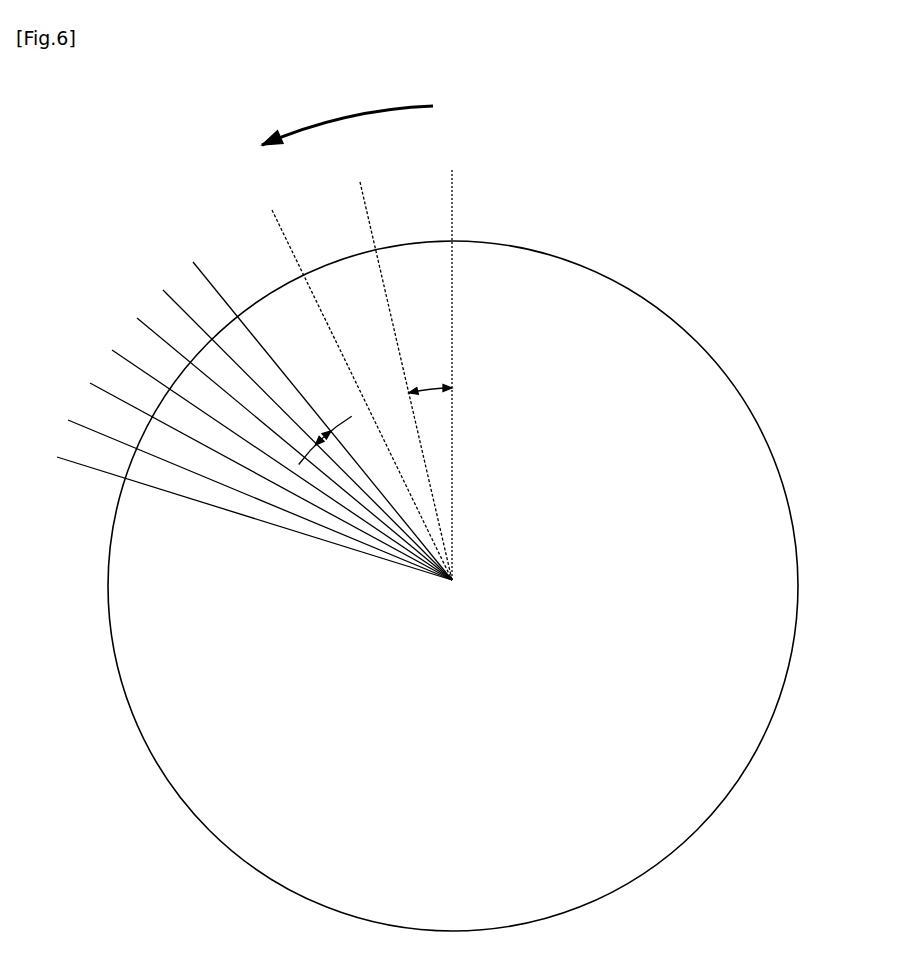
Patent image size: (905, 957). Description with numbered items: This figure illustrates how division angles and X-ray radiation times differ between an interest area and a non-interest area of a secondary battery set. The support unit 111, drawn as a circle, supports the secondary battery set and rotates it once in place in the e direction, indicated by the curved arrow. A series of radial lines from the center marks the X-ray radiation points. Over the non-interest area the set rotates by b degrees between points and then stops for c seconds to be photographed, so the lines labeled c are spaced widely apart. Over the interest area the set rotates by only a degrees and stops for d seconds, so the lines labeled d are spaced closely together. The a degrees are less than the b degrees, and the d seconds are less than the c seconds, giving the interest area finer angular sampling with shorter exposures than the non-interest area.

The support unit 111 is at (748, 440).
The division angle for interest area a is at (325, 424).
The division angle for non-interest area b is at (430, 373).
The X-ray radiation time for non-interest area c is at (359, 358).
The X-ray radiation time for interest area d is at (242, 405).
The rotation direction e is at (347, 111).